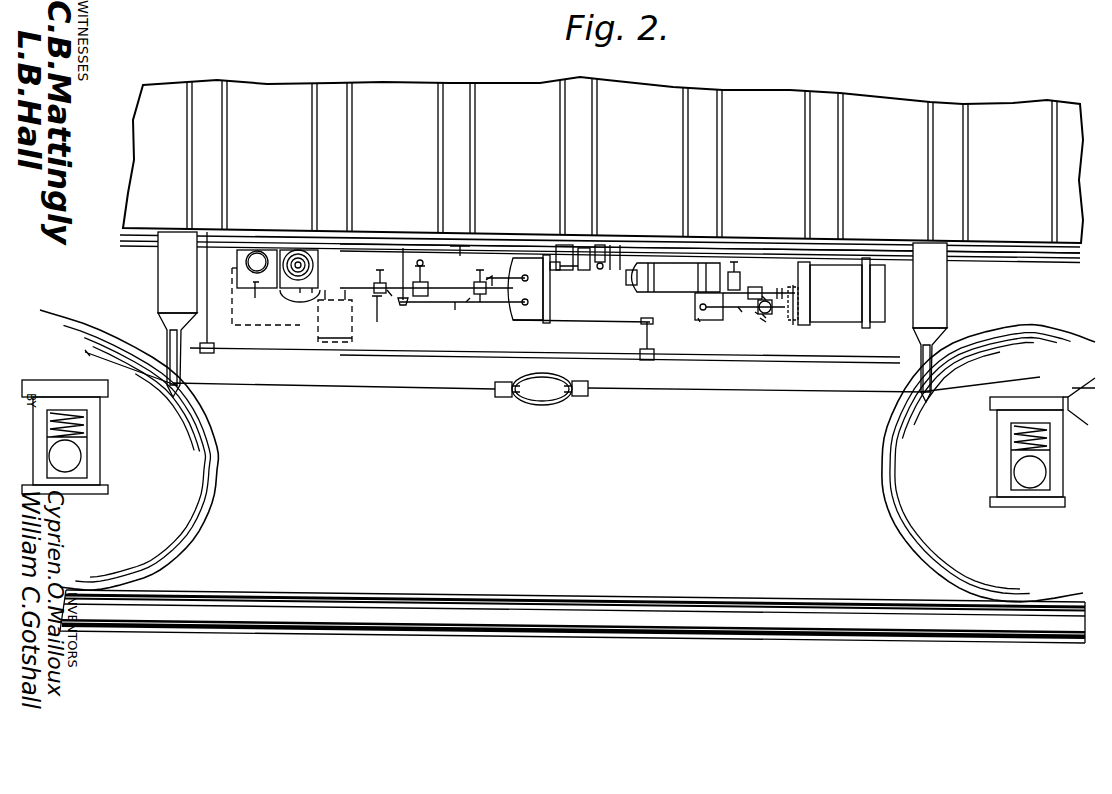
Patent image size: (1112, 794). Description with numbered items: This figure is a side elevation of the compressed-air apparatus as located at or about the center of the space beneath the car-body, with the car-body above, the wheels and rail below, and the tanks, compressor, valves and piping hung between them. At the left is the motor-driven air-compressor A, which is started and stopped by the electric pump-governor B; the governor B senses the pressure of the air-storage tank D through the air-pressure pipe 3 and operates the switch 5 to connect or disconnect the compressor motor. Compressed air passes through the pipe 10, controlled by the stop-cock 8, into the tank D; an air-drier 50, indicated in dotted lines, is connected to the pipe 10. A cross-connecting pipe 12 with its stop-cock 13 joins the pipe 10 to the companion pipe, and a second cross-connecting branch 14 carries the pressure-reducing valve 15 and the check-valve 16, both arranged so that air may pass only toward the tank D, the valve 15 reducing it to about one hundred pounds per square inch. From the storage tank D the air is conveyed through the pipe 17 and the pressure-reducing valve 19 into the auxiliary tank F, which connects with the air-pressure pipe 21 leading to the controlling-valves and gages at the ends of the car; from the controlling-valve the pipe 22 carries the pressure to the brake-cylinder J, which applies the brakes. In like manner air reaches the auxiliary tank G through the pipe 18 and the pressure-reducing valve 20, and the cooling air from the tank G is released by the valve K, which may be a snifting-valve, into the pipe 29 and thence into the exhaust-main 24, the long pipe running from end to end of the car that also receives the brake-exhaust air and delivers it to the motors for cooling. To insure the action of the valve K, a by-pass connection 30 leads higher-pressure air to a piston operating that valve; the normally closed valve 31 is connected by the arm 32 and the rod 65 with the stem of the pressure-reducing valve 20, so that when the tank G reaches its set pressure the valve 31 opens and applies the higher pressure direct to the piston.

The air-pressure pipe 3 is at (457, 308).
The switch 5 is at (456, 250).
The stop-cock 8 is at (408, 299).
The pipe 10 is at (373, 280).
The pipe 12 is at (387, 293).
The stop-cock 13 is at (376, 319).
The cross-connecting branch 14 is at (480, 300).
The pressure-reducing valve 15 is at (485, 281).
The check-valve 16 is at (469, 305).
The pipe 17 is at (730, 280).
The pipe 18 is at (765, 318).
The pressure-reducing valve 19 is at (738, 310).
The pressure-reducing valve 20 is at (762, 300).
The air-pressure pipe 21 is at (493, 243).
The pipe 22 is at (140, 248).
The exhaust-main 24 is at (412, 351).
The pipe 29 is at (698, 320).
The by-pass connection 30 is at (750, 305).
The valve 31 is at (763, 316).
The arm 32 is at (755, 313).
The air-drier 50 is at (318, 338).
The rod 65 is at (759, 292).
The motor-driven air-compressor A is at (267, 290).
The electric pump-governor B is at (428, 283).
The tank or reservoir D is at (600, 310).
The auxiliary tank F is at (673, 286).
The auxiliary tank G is at (841, 293).
The brake-cylinder J is at (585, 268).
The valve K is at (797, 326).